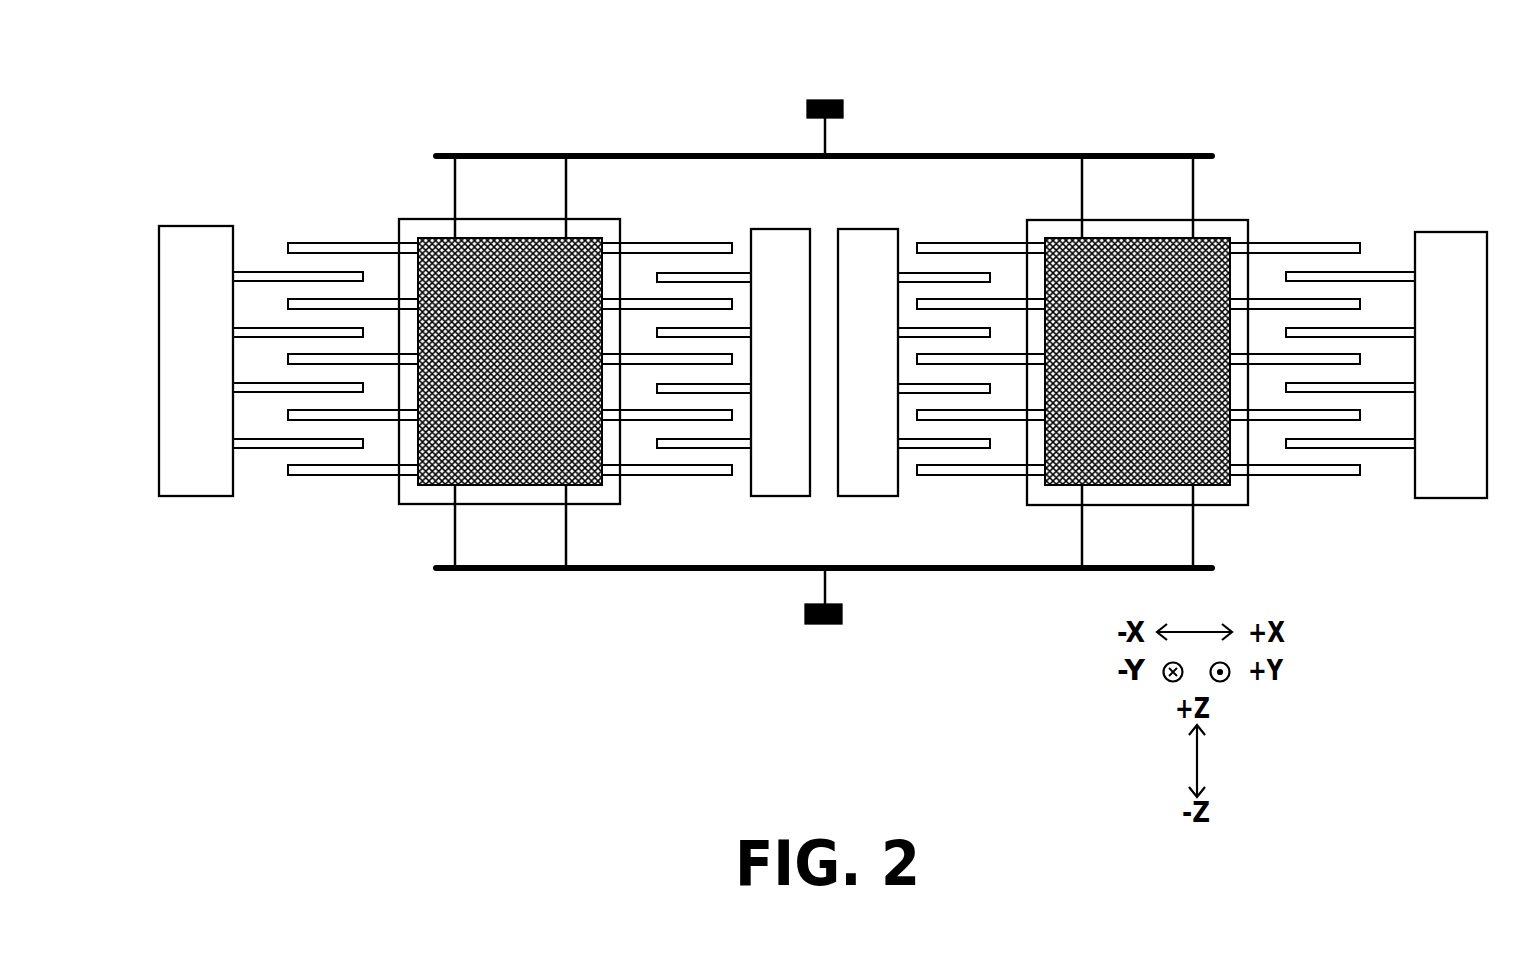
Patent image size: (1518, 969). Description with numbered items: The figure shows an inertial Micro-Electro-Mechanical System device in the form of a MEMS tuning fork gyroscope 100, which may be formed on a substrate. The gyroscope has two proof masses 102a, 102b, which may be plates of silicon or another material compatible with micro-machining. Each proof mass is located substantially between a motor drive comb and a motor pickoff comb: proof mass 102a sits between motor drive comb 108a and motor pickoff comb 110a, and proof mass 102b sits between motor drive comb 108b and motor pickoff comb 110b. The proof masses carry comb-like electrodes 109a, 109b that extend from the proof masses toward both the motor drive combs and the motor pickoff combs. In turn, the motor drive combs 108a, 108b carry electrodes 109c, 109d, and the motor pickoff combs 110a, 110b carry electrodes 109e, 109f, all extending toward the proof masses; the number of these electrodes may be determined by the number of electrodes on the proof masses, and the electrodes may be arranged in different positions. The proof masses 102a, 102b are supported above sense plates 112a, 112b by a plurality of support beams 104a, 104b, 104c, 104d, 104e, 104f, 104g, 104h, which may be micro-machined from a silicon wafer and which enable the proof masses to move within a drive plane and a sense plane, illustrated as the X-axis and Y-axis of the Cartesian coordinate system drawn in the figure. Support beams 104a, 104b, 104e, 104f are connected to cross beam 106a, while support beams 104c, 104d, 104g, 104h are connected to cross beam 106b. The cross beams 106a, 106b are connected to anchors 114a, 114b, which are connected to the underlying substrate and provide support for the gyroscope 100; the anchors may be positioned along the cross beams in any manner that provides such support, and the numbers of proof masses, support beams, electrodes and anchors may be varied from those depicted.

The MEMS tuning fork gyroscope 100 is at (240, 76).
The proof mass 102a is at (447, 260).
The proof mass 102b is at (1188, 268).
The support beam 104a is at (456, 183).
The support beam 104b is at (567, 183).
The support beam 104c is at (456, 532).
The support beam 104d is at (567, 532).
The support beam 104e is at (1081, 183).
The support beam 104f is at (1192, 183).
The support beam 104g is at (1081, 532).
The support beam 104h is at (1192, 532).
The cross beam 106a is at (905, 155).
The cross beam 106b is at (997, 569).
The motor drive comb 108a is at (261, 356).
The motor drive comb 108b is at (1386, 367).
The comb-like electrodes 109a is at (323, 490).
The comb-like electrodes 109b is at (995, 494).
The electrodes 109c is at (260, 486).
The electrodes 109d is at (1389, 472).
The electrodes 109e is at (706, 469).
The electrodes 109f is at (922, 465).
The motor pickoff comb 110a is at (733, 356).
The motor pickoff comb 110b is at (914, 356).
The sense plate 112a is at (432, 493).
The sense plate 112b is at (1225, 498).
The anchor 114a is at (845, 110).
The anchor 114b is at (805, 613).